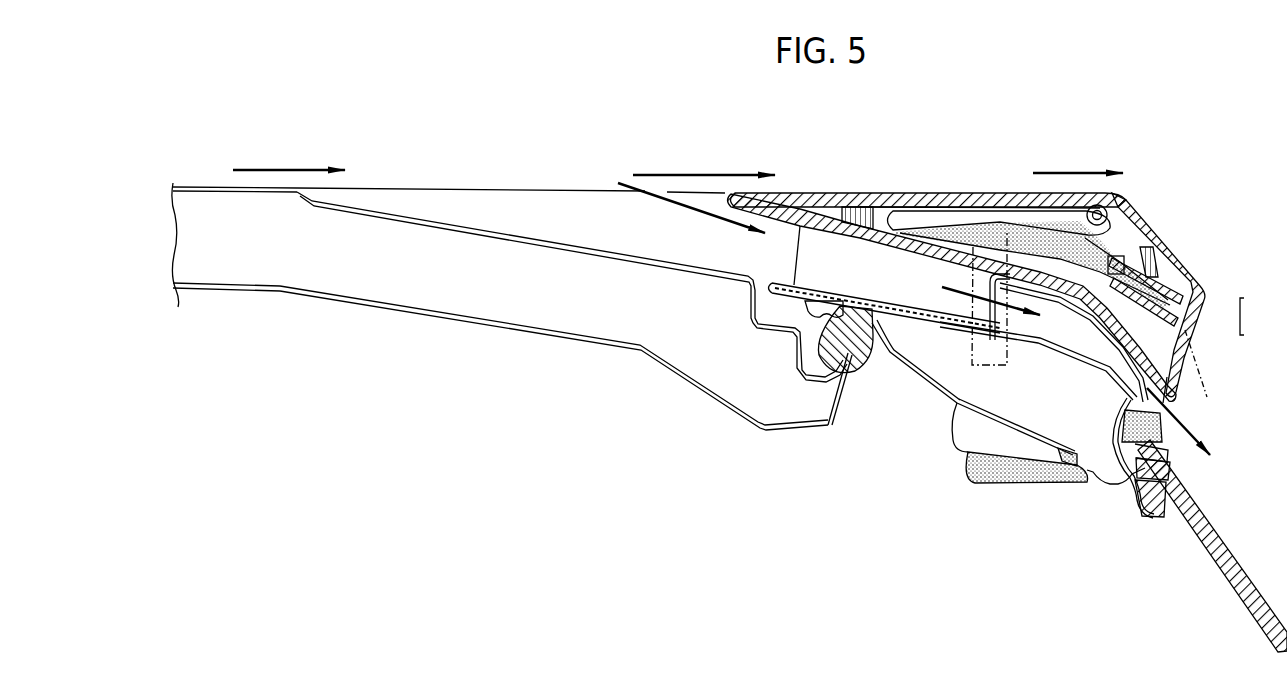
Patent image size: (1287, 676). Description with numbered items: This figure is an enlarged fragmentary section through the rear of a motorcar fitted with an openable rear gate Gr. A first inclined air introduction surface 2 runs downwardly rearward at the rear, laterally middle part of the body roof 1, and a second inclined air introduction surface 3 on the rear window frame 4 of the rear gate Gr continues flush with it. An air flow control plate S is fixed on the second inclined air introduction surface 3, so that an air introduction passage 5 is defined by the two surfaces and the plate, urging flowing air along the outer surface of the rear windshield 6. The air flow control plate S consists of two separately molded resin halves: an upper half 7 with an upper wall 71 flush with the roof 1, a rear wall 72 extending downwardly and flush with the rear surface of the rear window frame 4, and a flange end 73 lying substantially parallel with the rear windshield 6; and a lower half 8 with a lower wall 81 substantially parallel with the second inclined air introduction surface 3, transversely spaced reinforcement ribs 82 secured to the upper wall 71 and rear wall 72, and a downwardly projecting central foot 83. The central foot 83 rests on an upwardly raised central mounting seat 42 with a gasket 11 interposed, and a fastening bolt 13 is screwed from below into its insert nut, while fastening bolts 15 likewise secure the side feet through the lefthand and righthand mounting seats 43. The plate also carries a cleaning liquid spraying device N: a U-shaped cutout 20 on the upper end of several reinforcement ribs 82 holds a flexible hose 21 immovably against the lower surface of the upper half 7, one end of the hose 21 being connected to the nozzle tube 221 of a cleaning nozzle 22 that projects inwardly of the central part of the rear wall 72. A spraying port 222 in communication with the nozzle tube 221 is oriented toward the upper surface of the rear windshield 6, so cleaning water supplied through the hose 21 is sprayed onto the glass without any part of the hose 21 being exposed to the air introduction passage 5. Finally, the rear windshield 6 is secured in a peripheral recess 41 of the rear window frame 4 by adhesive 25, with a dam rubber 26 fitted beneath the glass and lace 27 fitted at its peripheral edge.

The body roof 1 is at (197, 186).
The first inclined air introduction surface 2 is at (605, 253).
The second inclined air introduction surface 3 is at (952, 318).
The rear window frame 4 is at (1106, 485).
The air introduction passage 5 is at (860, 278).
The rear windshield 6 is at (1205, 535).
The upper half 7 is at (904, 192).
The upper wall 71 is at (982, 194).
The rear wall 72 is at (1140, 228).
The flange end 73 is at (1177, 363).
The lower half 8 is at (800, 235).
The lower wall 81 is at (903, 243).
The reinforcement ribs 82 is at (873, 212).
The central foot 83 is at (996, 290).
The gasket 11 is at (815, 285).
The fastening bolt 13 is at (808, 309).
The fastening bolts 15 is at (1033, 357).
The U-shaped cutout 20 is at (1113, 208).
The flexible hose 21 is at (1092, 247).
The cleaning nozzle 22 is at (1191, 295).
The nozzle tube 221 is at (1192, 300).
The spraying port 222 is at (1182, 323).
The adhesive 25 is at (1165, 467).
The dam rubber 26 is at (1170, 500).
The lace 27 is at (1155, 437).
The peripheral recess 41 is at (1160, 458).
The central mounting seat 42 is at (998, 349).
The lefthand and righthand mounting seats 43 is at (1060, 350).
The rear gate Gr is at (920, 387).
The air flow control plate S is at (943, 190).
The cleaning liquid spraying device N is at (1187, 278).